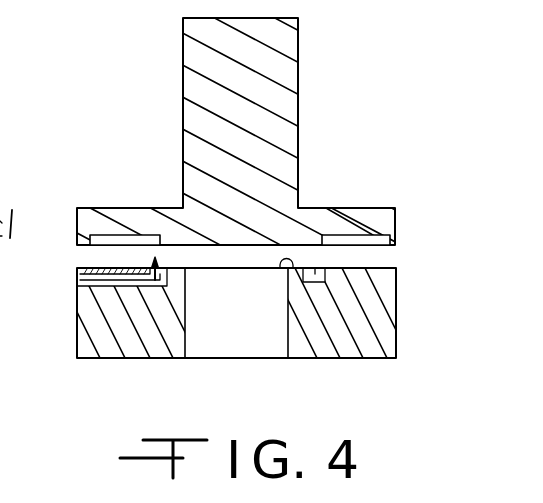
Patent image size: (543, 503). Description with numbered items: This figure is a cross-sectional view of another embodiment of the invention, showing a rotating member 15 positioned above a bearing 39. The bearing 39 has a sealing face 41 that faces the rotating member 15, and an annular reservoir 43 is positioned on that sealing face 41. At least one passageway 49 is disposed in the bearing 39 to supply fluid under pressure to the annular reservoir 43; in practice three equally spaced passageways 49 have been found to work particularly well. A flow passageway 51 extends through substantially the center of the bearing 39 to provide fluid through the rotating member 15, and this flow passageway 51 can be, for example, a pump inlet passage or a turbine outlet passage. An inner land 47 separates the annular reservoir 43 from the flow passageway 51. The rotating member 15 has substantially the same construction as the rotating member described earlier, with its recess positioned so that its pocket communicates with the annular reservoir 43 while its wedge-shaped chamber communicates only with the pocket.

The rotating member 15 is at (200, 89).
The bearing 39 is at (242, 319).
The sealing face 41 is at (378, 263).
The annular reservoir 43 is at (316, 267).
The inner land 47 is at (281, 270).
The passageway 49 is at (77, 280).
The flow passageway 51 is at (245, 343).